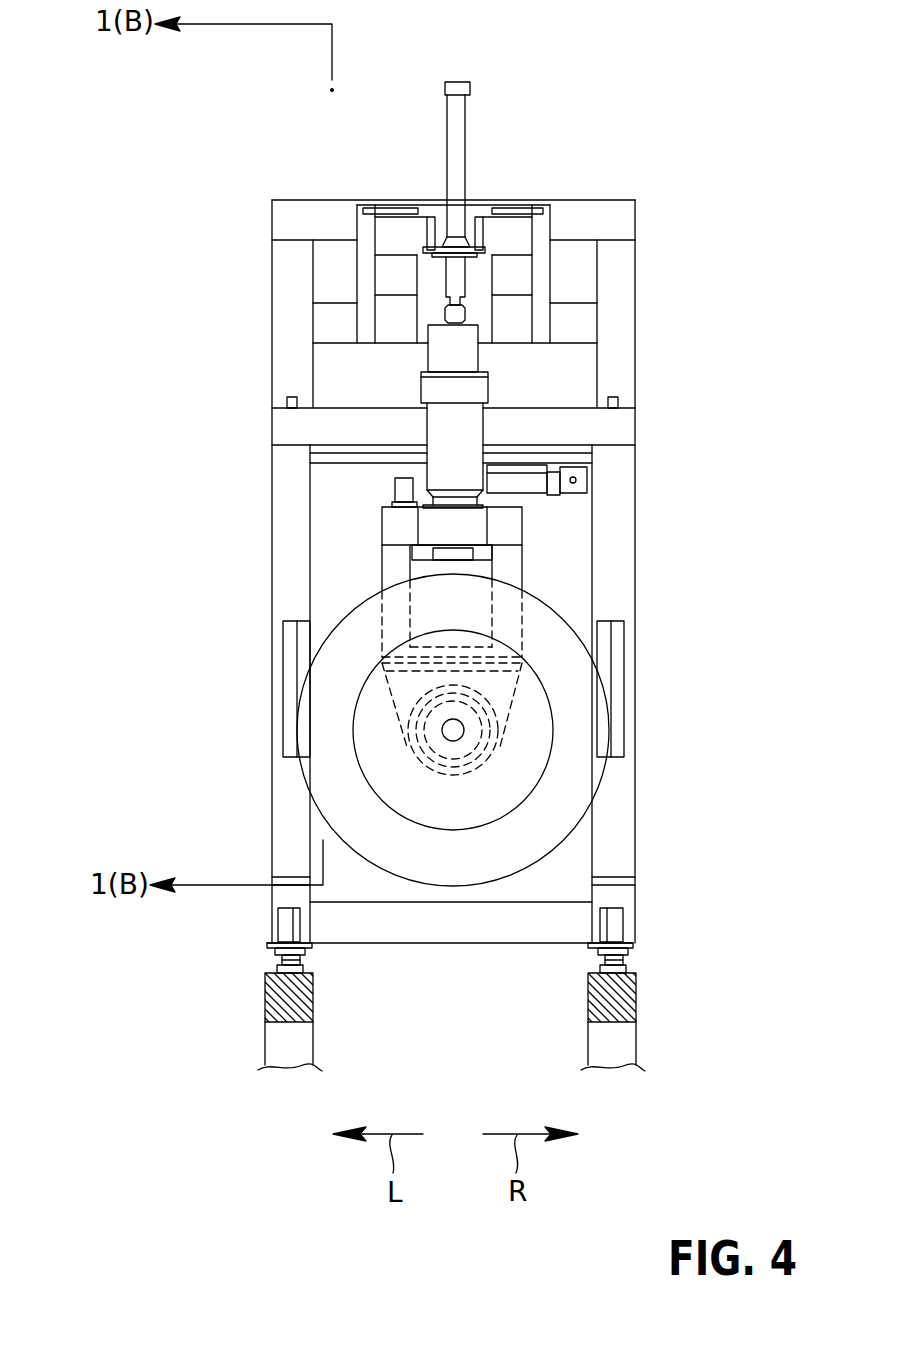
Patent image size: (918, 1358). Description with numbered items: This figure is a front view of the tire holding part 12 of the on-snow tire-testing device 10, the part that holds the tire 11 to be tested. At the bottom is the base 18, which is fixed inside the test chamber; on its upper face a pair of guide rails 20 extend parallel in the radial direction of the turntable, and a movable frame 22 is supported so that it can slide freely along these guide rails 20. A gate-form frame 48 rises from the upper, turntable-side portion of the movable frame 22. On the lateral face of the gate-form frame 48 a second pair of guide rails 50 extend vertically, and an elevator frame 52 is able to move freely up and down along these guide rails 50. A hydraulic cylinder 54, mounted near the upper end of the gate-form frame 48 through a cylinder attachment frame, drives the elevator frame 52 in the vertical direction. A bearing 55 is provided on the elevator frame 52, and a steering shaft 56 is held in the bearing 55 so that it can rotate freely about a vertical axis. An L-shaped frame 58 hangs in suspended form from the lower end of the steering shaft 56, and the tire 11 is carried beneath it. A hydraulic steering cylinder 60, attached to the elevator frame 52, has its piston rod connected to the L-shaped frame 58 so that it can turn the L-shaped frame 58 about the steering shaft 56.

The on-snow tire-testing device 10 is at (563, 110).
The tire holding part 12 is at (587, 197).
The hydraulic cylinder 54 is at (468, 145).
The gate-form frame 48 is at (625, 297).
The bearing 55 is at (438, 470).
The L-shaped frame 58 is at (382, 528).
The steering shaft 56 is at (443, 548).
The elevator frame 52 is at (618, 510).
The hydraulic steering cylinder 60 is at (533, 497).
The guide rails 50 is at (283, 650).
The tire 11 is at (588, 832).
The guide rails 20 is at (290, 935).
The movable frame 22 is at (633, 930).
The base 18 is at (633, 993).